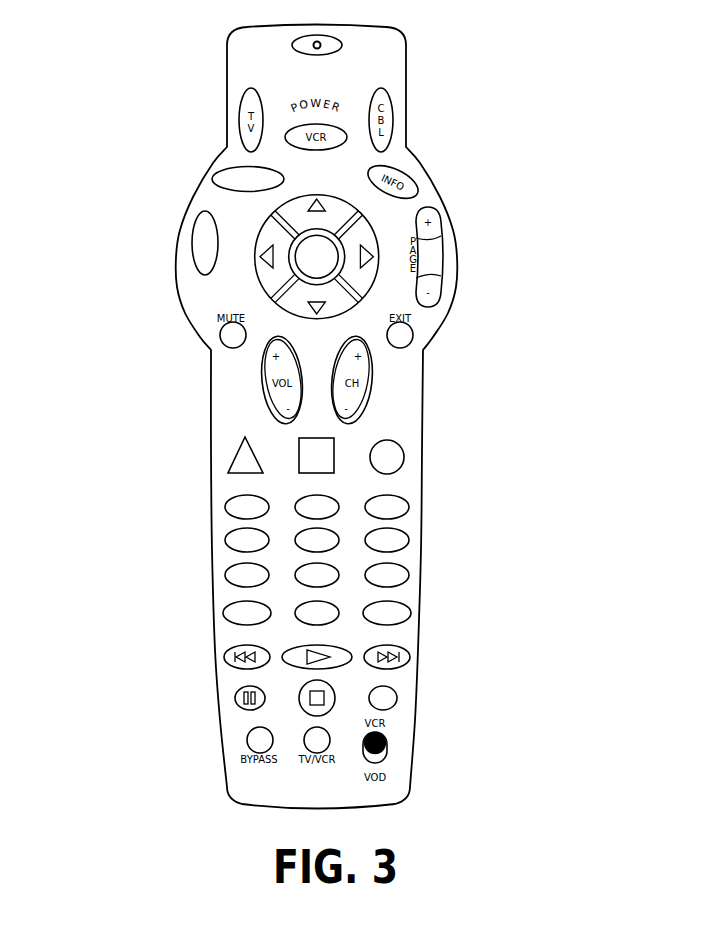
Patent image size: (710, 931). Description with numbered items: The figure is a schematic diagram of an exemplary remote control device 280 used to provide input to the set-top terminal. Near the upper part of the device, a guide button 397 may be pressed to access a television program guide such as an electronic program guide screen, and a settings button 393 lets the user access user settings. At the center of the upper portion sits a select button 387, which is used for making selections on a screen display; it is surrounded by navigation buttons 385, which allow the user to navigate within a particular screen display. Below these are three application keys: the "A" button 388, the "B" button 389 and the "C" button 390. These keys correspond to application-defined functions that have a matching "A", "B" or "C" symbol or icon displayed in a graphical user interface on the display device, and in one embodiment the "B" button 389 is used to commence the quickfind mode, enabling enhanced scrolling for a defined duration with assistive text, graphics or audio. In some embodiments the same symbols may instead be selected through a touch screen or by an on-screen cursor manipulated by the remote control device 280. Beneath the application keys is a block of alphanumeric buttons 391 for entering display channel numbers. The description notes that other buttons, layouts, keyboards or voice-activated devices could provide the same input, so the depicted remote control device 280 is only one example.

The remote control device 280 is at (562, 128).
The guide button 397 is at (213, 176).
The select button 387 is at (295, 243).
The settings button 393 is at (192, 247).
The navigation buttons 385 is at (258, 258).
The "A" button 388 is at (233, 460).
The "B" button 389 is at (299, 442).
The "C" button 390 is at (404, 457).
The alphanumeric buttons 391 is at (430, 498).